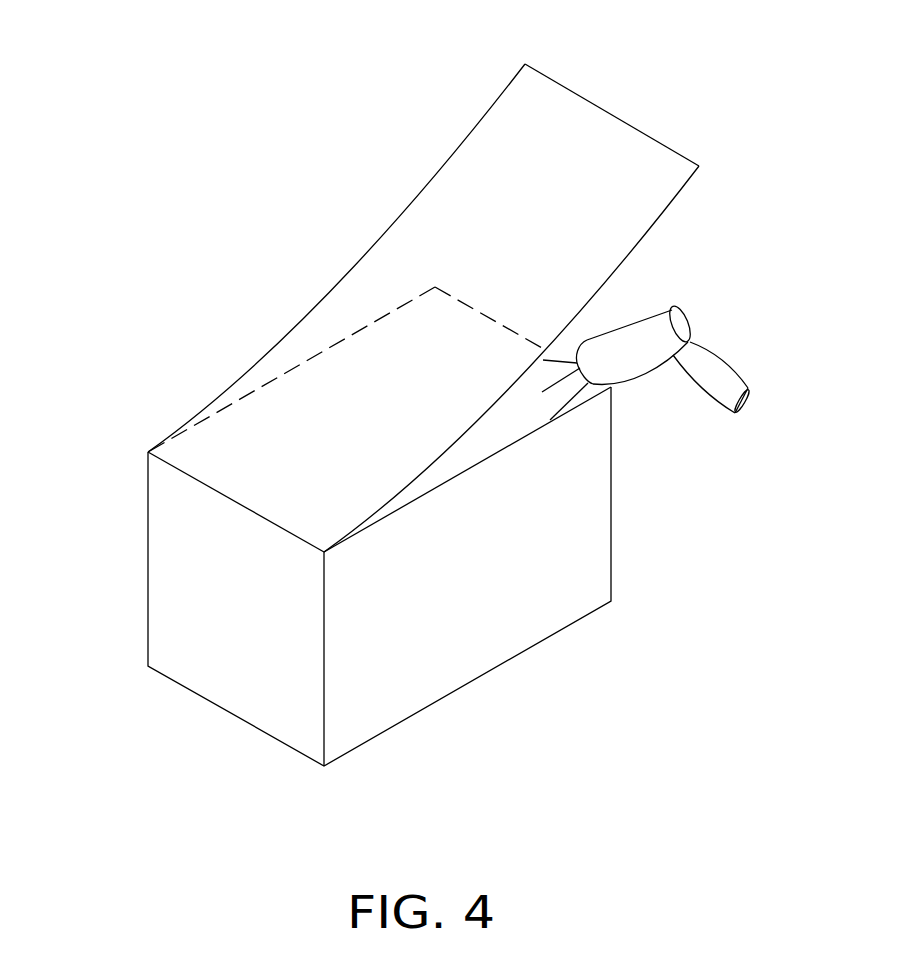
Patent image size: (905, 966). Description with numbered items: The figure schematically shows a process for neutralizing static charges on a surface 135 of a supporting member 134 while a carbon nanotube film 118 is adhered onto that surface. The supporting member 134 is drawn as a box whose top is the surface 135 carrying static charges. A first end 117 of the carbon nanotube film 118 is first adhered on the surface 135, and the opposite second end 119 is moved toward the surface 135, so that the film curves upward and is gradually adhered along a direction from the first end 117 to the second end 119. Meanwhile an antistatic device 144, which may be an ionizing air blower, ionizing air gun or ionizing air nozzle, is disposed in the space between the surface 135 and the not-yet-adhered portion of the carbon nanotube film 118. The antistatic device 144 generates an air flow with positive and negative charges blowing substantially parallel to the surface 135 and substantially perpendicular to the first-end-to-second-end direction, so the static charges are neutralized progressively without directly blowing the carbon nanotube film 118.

The first end 117 is at (257, 498).
The carbon nanotube film 118 is at (433, 238).
The second end 119 is at (592, 118).
The supporting member 134 is at (503, 602).
The surface 135 is at (507, 428).
The antistatic device 144 is at (723, 387).